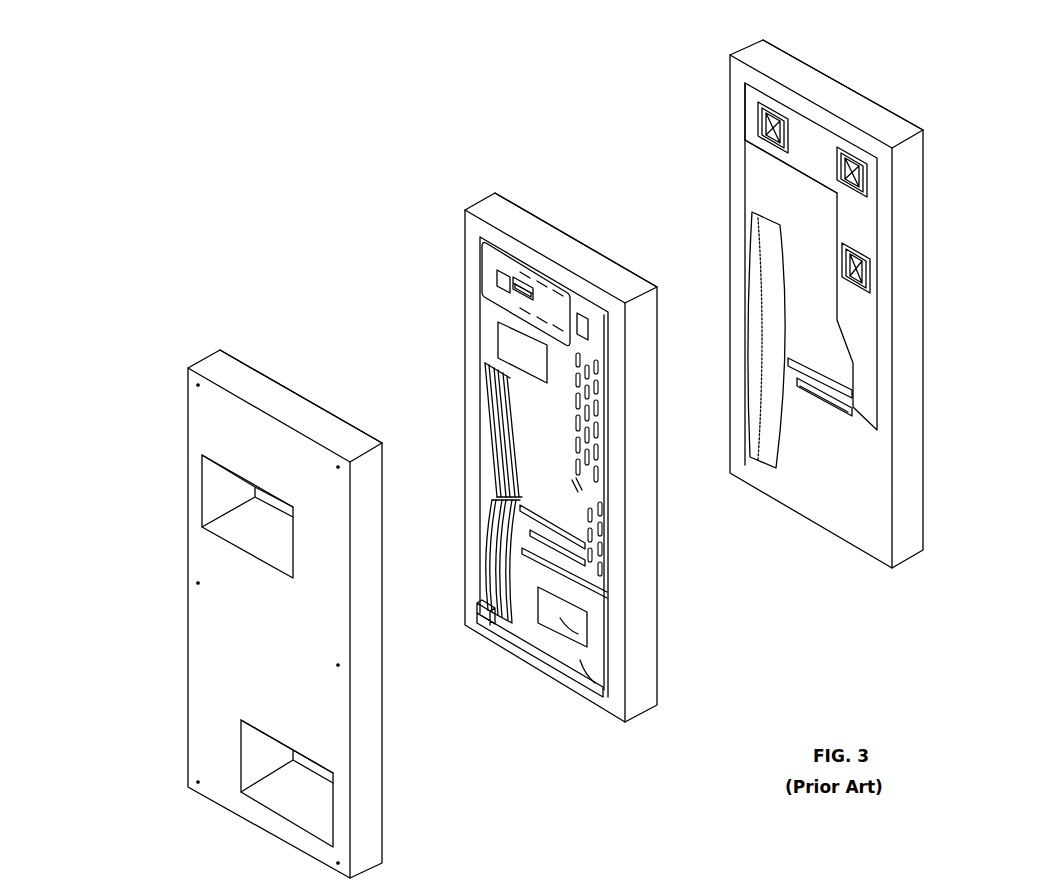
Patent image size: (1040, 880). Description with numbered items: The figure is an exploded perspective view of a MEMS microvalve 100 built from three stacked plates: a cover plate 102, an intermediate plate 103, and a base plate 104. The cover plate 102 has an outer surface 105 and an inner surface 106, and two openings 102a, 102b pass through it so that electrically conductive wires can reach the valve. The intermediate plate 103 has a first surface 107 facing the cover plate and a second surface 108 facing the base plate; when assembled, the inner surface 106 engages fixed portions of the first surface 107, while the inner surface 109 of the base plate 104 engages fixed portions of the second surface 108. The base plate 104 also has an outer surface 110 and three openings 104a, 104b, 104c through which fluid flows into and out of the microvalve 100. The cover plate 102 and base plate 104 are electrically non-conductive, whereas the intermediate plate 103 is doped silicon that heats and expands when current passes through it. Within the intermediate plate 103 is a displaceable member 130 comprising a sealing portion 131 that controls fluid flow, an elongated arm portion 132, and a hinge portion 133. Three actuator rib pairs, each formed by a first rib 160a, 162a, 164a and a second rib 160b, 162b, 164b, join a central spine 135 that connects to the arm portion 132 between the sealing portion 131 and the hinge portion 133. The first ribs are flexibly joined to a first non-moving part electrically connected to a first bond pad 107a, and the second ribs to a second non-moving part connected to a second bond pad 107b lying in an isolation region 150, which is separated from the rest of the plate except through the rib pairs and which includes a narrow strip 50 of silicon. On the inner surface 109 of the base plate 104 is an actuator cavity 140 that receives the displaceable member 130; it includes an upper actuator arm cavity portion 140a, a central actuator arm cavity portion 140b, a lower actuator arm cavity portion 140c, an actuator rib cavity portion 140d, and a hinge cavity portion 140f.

The MEMS microvalve 100 is at (326, 162).
The cover plate 102 is at (204, 356).
The opening 102a is at (214, 488).
The opening 102b is at (257, 768).
The intermediate plate 103 is at (472, 197).
The base plate 104 is at (748, 48).
The opening 104a is at (765, 125).
The opening 104b is at (853, 186).
The opening 104c is at (857, 286).
The outer surface 105 is at (265, 637).
The inner surface 106 is at (284, 385).
The first surface 107 is at (470, 257).
The first bond pad 107a is at (512, 337).
The second bond pad 107b is at (607, 657).
The second surface 108 is at (536, 207).
The inner surface 109 is at (845, 490).
The outer surface 110 is at (884, 102).
The displaceable member 130 is at (600, 436).
The sealing portion 131 is at (568, 300).
The elongated arm portion 132 is at (600, 455).
The hinge portion 133 is at (606, 605).
The central spine 135 is at (600, 505).
The actuator cavity 140 is at (813, 133).
The upper actuator arm cavity portion 140a is at (800, 160).
The central actuator arm cavity portion 140b is at (862, 332).
The lower actuator arm cavity portion 140c is at (862, 410).
The actuator rib cavity portion 140d is at (768, 452).
The hinge cavity portion 140f is at (815, 390).
The isolation region 150 is at (607, 688).
The first rib 160a is at (511, 453).
The first rib 162a is at (508, 432).
The first rib 164a is at (505, 408).
The second rib 160b is at (492, 535).
The second rib 162b is at (502, 542).
The second rib 164b is at (511, 550).
The narrow strip 50 is at (495, 616).